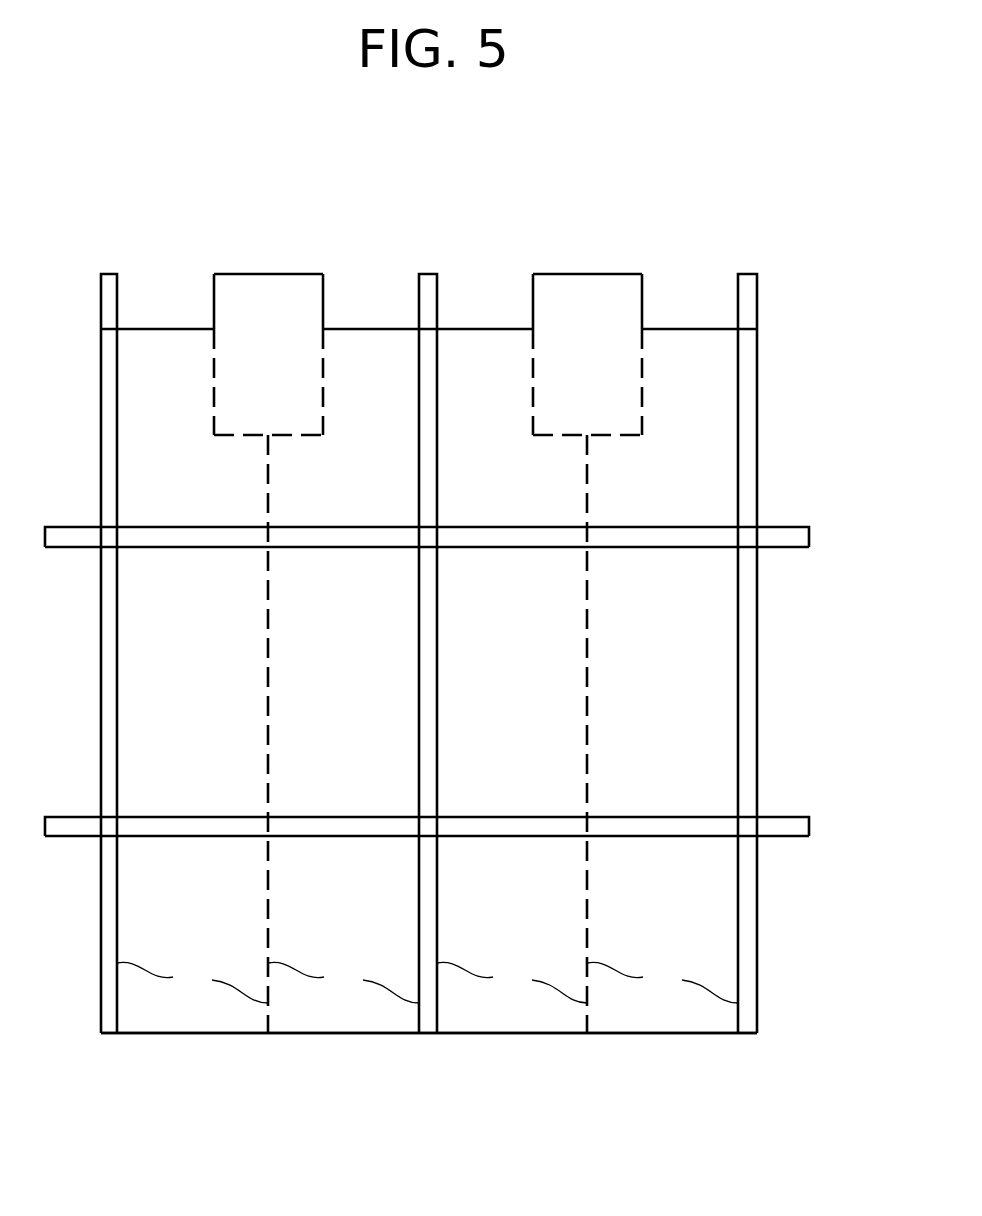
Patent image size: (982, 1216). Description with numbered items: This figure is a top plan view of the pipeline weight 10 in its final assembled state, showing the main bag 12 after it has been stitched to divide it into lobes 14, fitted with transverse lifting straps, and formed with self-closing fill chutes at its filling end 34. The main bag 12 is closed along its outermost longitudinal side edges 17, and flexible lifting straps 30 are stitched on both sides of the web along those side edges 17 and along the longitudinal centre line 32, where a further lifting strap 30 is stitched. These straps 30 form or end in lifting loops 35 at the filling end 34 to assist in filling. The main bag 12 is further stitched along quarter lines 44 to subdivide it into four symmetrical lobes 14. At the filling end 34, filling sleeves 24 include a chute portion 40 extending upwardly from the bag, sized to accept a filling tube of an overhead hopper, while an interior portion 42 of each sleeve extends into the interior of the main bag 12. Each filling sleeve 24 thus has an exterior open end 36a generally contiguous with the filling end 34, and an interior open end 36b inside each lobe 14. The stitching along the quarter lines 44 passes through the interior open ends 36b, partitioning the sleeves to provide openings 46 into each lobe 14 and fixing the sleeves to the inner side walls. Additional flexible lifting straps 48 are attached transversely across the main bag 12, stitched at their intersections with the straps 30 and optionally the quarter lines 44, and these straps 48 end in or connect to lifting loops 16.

The structural assembly 10 is at (838, 387).
The main bag 12 is at (713, 915).
The lobes 14 is at (180, 742).
The lifting loops 16 is at (45, 526).
The longitudinal side edges 17 is at (427, 982).
The filling sleeves 24 is at (325, 272).
The flexible lifting straps 30 is at (112, 645).
The longitudinal centre line 32 is at (428, 685).
The filling end 34 is at (165, 327).
The lifting loops 35 is at (109, 272).
The exterior open end 36a is at (270, 272).
The interior open end 36b is at (292, 433).
The chute portion 40 is at (327, 300).
The interior portion 42 is at (233, 358).
The quarter lines 44 is at (270, 660).
The openings 46 is at (222, 437).
The additional flexible lifting straps 48 is at (190, 540).